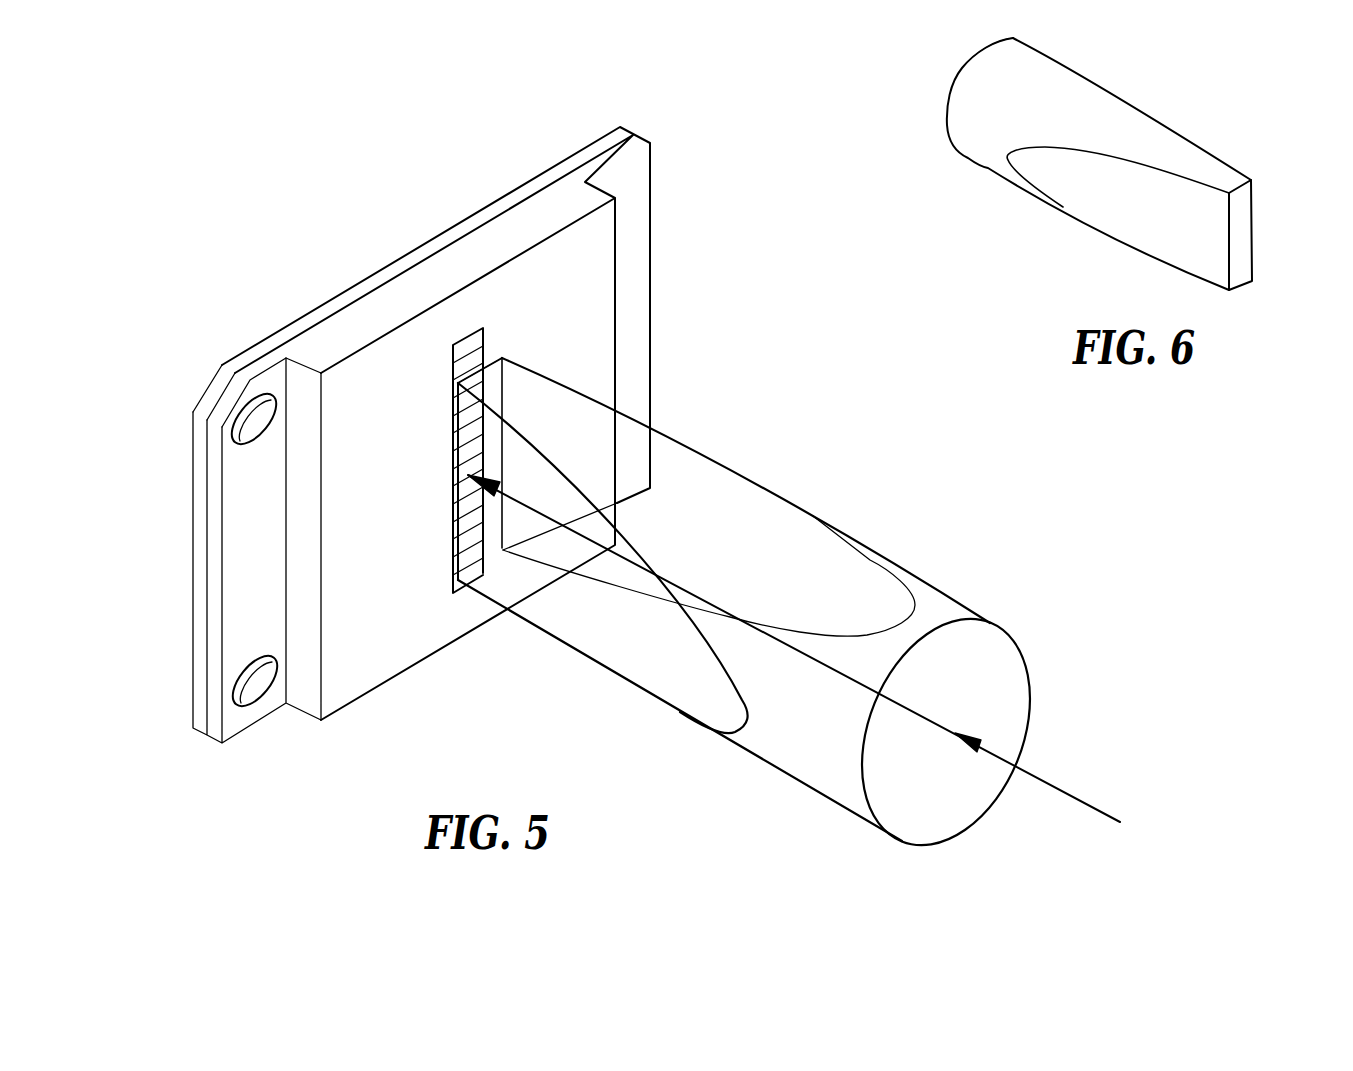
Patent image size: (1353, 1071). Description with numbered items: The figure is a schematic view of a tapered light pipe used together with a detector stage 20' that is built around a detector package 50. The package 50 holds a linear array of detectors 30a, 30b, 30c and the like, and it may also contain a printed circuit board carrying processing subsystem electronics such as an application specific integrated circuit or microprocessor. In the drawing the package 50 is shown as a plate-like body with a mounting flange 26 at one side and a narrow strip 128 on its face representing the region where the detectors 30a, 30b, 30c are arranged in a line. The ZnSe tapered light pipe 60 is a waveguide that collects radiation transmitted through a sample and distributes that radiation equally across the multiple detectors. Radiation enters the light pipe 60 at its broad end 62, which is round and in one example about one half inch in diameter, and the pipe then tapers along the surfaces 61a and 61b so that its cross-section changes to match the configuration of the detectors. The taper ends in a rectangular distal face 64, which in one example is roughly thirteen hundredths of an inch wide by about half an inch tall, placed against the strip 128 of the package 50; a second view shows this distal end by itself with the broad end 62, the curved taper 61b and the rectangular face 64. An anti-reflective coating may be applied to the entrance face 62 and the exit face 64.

In FIG. 5, the detector stage 20' is at (421, 435).
In FIG. 5, the mounting flange 26 is at (340, 300).
In FIG. 5, the package 50 is at (476, 277).
In FIG. 5, the LED array strip 128 is at (483, 340).
In FIG. 5, the detector 30a is at (457, 402).
In FIG. 5, the detector 30b is at (458, 425).
In FIG. 5, the detector 30c is at (468, 430).
In FIG. 5, the tapered light pipe 60 is at (948, 612).
In FIG. 6, the tapered light pipe 60 is at (1138, 80).
In FIG. 5, the rectangular distal face 64 is at (495, 397).
In FIG. 6, the rectangular distal face 64 is at (1243, 205).
In FIG. 5, the taper 61a is at (566, 623).
In FIG. 5, the taper 61b is at (697, 540).
In FIG. 6, the taper 61b is at (1075, 192).
In FIG. 5, the broad end 62 is at (1003, 684).
In FIG. 6, the broad end 62 is at (968, 63).